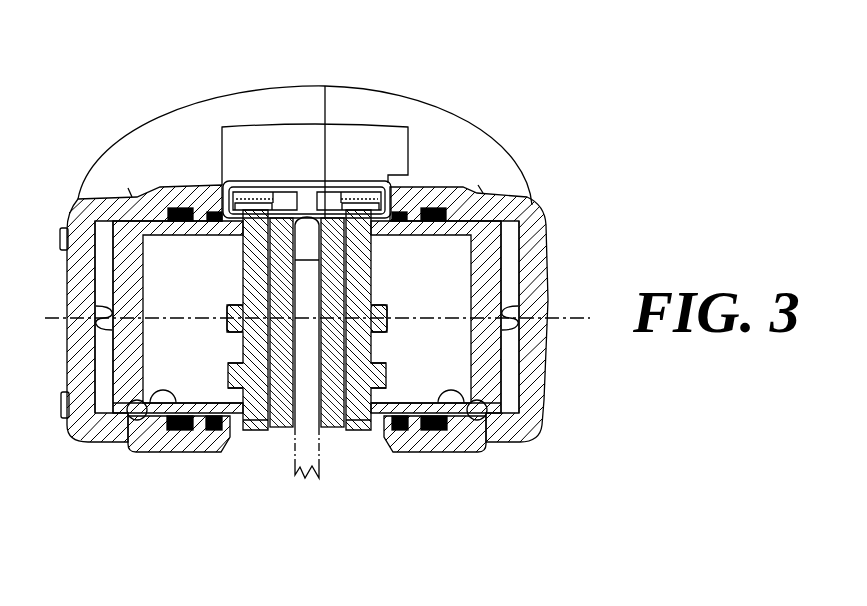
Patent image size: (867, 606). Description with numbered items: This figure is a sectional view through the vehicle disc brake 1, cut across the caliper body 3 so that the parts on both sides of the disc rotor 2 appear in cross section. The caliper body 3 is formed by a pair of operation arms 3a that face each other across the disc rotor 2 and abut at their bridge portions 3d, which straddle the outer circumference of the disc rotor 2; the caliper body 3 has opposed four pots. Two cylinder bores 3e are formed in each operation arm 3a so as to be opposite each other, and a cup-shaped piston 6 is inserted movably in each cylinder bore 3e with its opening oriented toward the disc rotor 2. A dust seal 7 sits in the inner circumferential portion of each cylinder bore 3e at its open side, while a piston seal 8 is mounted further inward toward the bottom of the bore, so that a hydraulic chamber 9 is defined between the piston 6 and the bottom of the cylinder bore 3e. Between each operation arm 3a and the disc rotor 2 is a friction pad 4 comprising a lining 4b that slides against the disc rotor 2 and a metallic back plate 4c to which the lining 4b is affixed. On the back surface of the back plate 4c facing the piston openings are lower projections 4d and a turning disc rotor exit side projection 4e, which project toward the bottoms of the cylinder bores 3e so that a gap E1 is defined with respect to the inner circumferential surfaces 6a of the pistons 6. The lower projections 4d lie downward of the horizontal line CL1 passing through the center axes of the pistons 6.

The vehicle disc brake 1 is at (297, 31).
The disc rotor 2 is at (304, 483).
The caliper body 3 is at (310, 251).
The operation arm 3a is at (79, 368).
The bridge portion 3d is at (337, 95).
The cylinder bore 3e is at (133, 420).
The friction pad 4 is at (306, 357).
The lining 4b is at (281, 428).
The back plate 4c is at (257, 428).
The lower projection 4d is at (228, 375).
The turning disc rotor exit side projection 4e is at (226, 318).
The piston 6 is at (305, 346).
The inner circumferential surface 6a is at (153, 395).
The dust seal 7 is at (214, 224).
The piston seal 8 is at (181, 224).
The hydraulic chamber 9 is at (102, 297).
The horizontal line CL1 is at (572, 303).
The gap E1 is at (237, 399).